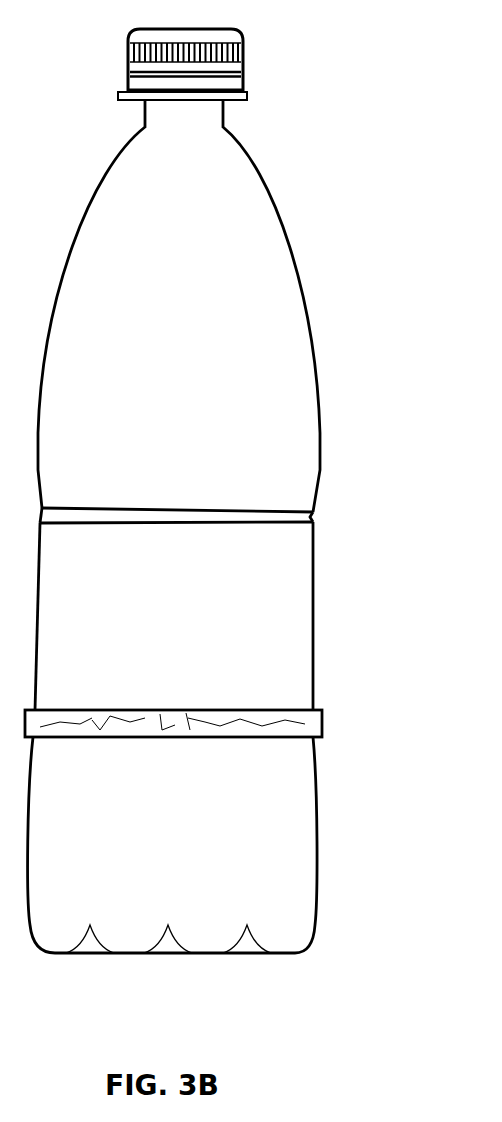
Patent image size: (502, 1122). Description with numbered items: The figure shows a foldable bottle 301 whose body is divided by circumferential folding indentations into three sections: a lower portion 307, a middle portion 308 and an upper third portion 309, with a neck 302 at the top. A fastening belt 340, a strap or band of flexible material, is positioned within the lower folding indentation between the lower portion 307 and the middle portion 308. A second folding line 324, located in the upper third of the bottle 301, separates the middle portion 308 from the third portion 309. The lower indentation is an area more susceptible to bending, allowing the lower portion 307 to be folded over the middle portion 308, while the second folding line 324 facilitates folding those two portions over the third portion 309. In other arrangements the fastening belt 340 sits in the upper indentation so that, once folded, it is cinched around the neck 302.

The bottle 301 is at (239, 491).
The neck 302 is at (205, 115).
The lower portion 307 is at (203, 846).
The middle portion 308 is at (205, 635).
The third portion 309 is at (210, 352).
The second folding line 324 is at (317, 518).
The fastening belt 340 is at (318, 723).